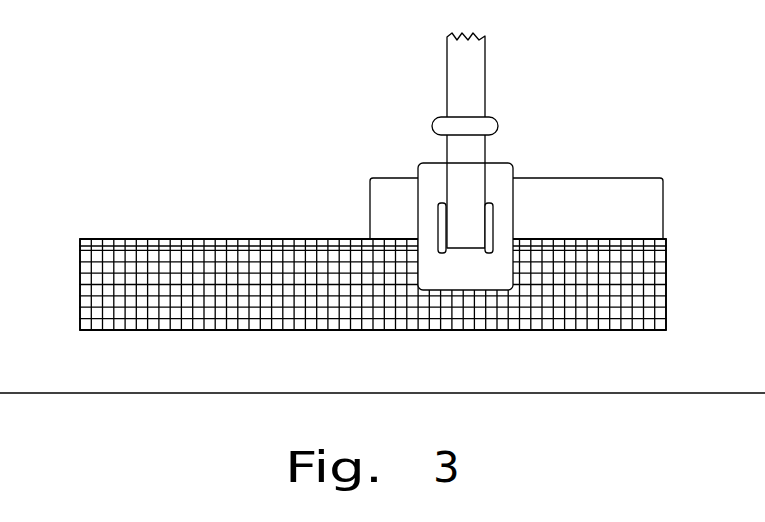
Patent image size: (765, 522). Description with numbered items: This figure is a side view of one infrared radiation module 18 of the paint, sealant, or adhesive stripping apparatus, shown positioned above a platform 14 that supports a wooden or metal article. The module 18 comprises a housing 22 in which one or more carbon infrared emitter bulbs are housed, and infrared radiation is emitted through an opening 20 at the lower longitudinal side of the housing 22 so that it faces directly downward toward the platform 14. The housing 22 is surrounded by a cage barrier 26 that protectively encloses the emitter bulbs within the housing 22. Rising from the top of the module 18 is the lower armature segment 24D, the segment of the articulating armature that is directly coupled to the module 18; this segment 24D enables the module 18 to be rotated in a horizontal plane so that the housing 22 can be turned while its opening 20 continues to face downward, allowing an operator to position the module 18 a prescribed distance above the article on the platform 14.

The platform 14 is at (212, 388).
The module 18 is at (370, 161).
The opening 20 is at (346, 283).
The housing 22 is at (287, 246).
The lower segment 24D is at (457, 101).
The cage barrier 26 is at (305, 312).